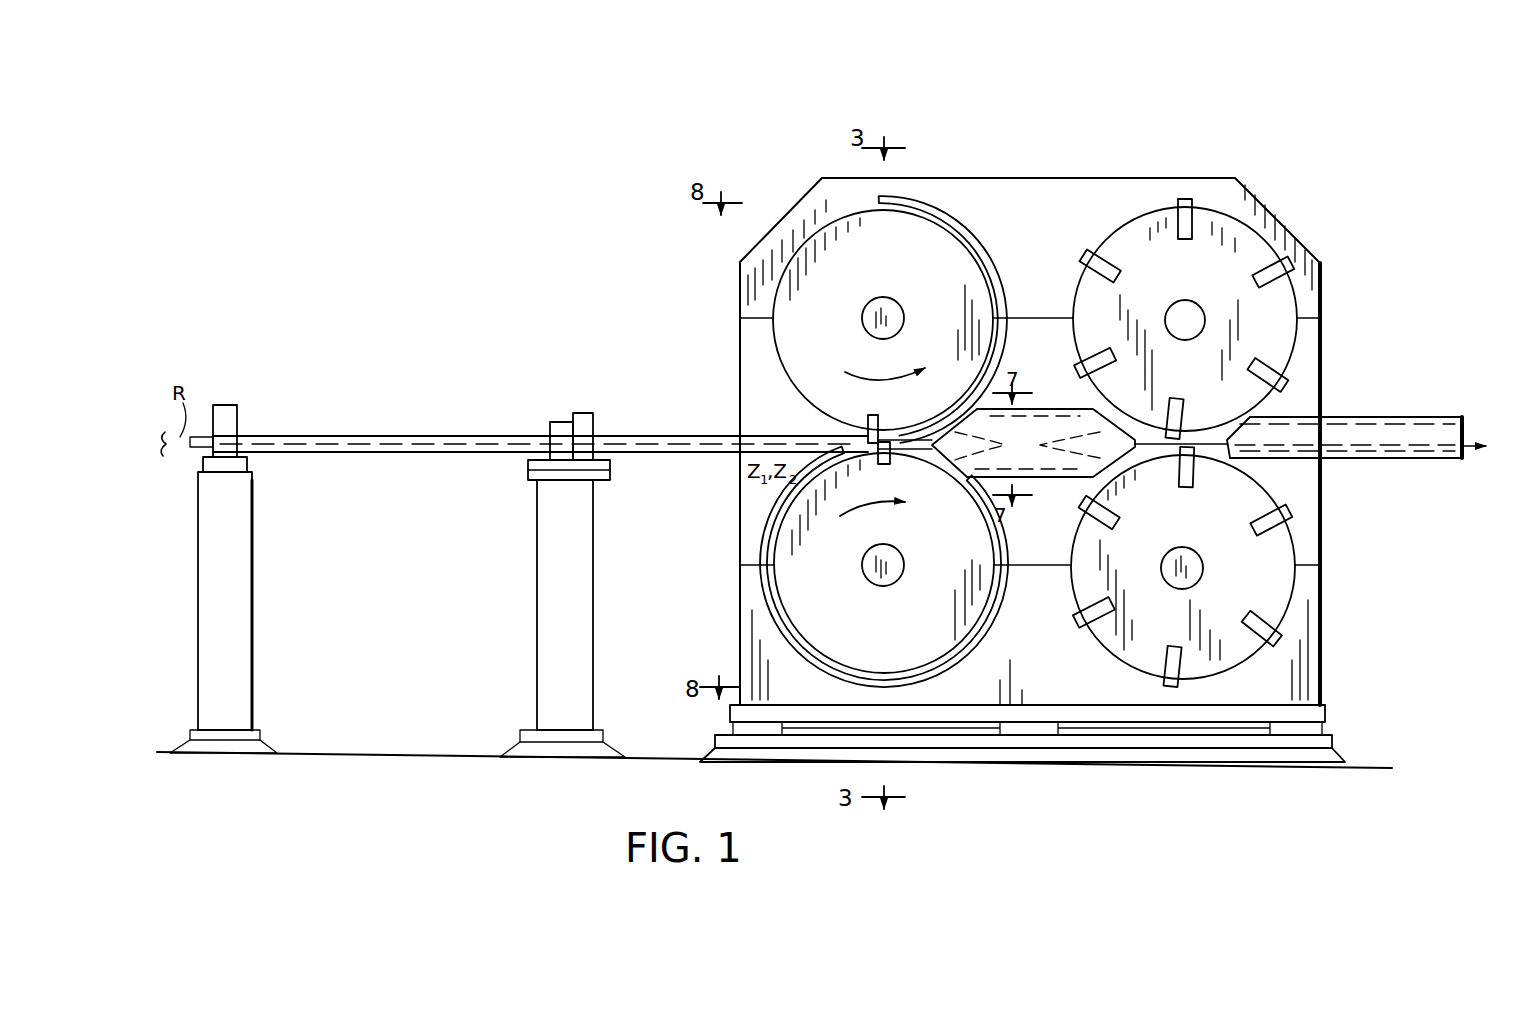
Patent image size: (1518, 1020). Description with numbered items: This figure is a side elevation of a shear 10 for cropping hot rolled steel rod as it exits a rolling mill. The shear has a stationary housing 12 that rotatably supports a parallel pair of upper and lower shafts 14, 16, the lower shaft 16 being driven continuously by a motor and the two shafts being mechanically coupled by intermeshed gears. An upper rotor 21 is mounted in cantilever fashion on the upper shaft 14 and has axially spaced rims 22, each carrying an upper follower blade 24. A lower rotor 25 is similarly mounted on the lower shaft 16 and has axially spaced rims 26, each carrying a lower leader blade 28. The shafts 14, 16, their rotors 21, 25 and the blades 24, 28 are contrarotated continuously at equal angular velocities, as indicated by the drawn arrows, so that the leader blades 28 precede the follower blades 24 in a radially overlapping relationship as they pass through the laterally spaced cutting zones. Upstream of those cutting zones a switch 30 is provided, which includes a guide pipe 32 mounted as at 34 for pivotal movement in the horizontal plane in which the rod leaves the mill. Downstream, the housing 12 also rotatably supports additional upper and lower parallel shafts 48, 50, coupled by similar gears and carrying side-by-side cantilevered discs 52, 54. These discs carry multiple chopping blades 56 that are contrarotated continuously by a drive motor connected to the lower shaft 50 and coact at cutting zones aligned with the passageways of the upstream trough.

The shear 10 is at (1290, 190).
The stationary housing 12 is at (1324, 270).
The upper shaft 14 is at (888, 310).
The lower shaft 16 is at (900, 574).
The upper rotor 21 is at (790, 378).
The rims 22 is at (992, 258).
The follower blade 24 is at (864, 418).
The lower rotor 25 is at (792, 526).
The rims 26 is at (975, 622).
The leader blade 28 is at (888, 468).
The switch 30 is at (370, 410).
The guide pipe 32 is at (462, 436).
The pivotal mounting 34 is at (246, 414).
The upper shaft 48 is at (1195, 315).
The lower shaft 50 is at (1195, 562).
The disc 52 is at (1100, 240).
The disc 54 is at (1104, 644).
The chopping blades 56 is at (1170, 655).